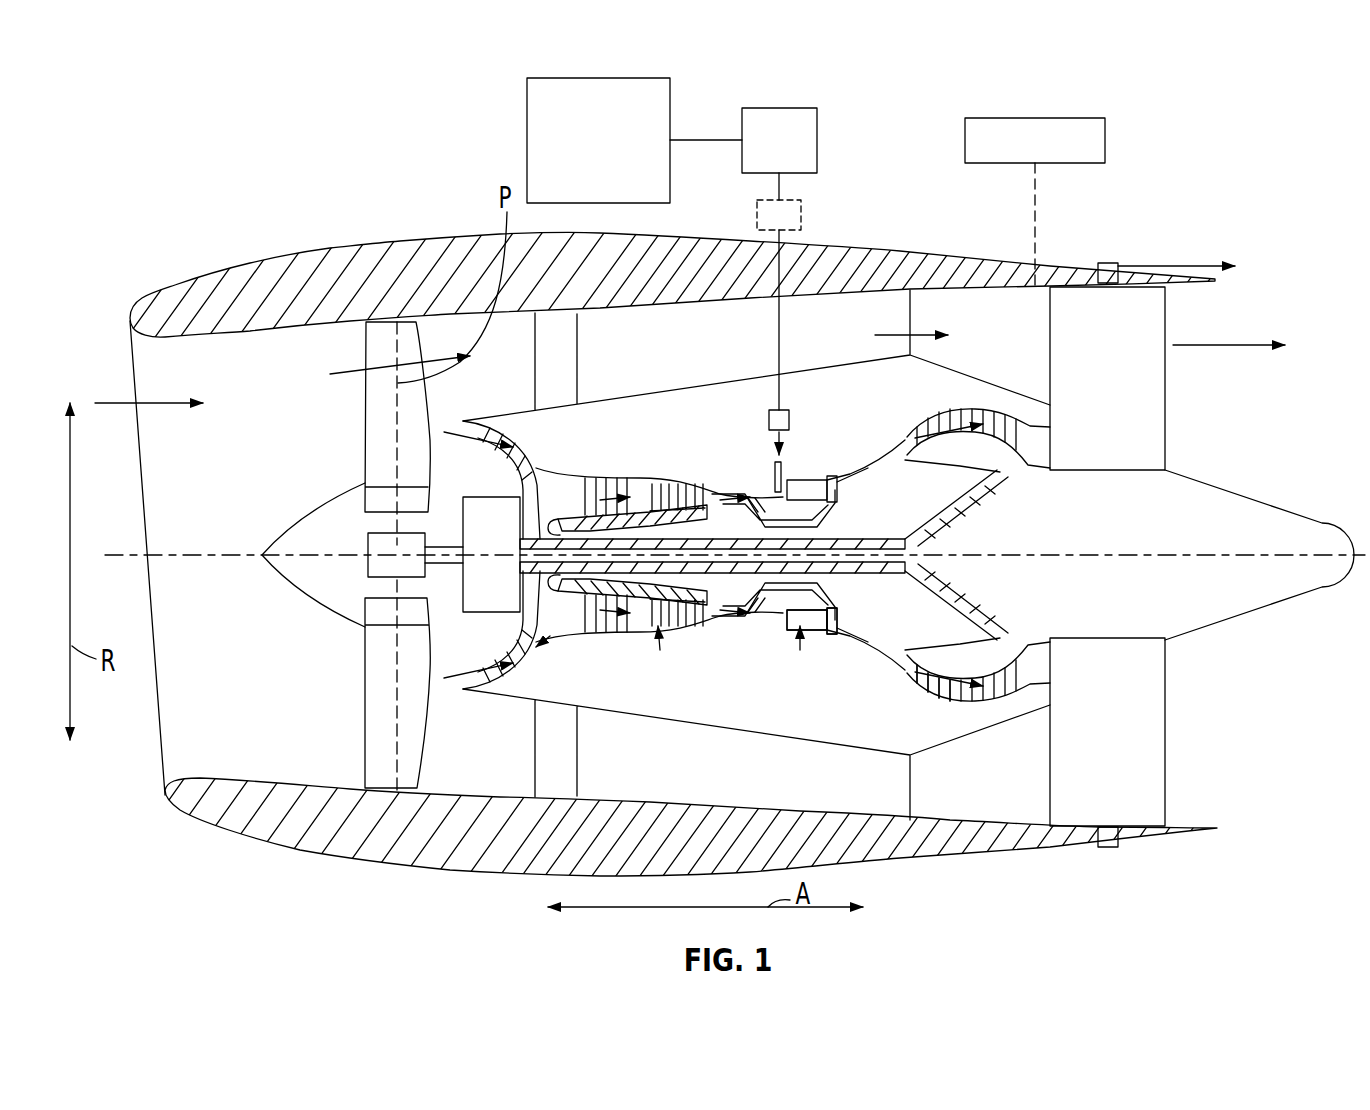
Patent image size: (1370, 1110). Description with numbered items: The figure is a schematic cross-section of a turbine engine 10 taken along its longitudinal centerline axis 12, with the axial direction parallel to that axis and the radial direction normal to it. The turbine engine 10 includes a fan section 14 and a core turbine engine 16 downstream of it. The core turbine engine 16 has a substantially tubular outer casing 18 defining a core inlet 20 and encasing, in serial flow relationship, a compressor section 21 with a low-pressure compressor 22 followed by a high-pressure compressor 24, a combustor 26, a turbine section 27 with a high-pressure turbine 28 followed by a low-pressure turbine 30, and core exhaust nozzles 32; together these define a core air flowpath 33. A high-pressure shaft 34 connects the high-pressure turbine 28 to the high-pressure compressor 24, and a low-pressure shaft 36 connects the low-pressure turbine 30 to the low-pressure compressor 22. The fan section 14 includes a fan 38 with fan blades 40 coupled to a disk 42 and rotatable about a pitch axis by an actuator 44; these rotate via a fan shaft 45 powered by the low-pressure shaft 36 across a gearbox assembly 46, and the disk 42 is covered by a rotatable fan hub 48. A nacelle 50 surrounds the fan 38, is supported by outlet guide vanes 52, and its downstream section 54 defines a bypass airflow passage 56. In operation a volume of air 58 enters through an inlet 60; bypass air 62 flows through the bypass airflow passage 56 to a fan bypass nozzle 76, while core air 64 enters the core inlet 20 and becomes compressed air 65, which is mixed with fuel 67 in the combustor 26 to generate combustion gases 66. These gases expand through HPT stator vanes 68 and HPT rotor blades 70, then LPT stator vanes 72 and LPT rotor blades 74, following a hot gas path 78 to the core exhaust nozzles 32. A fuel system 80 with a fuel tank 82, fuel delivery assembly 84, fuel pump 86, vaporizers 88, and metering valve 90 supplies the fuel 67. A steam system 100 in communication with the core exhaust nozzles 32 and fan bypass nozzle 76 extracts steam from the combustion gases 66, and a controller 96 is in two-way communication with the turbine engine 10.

The turbine engine 10 is at (245, 247).
The longitudinal centerline axis 12 is at (1160, 545).
The fan section 14 is at (335, 338).
The core turbine engine 16 is at (798, 388).
The outer casing 18 is at (749, 738).
The core inlet 20 is at (476, 677).
The compressor section 21 is at (661, 420).
The low-pressure compressor 22 is at (520, 638).
The high-pressure compressor 24 is at (607, 633).
The combustor 26 is at (788, 630).
The turbine section 27 is at (897, 409).
The high-pressure turbine 28 is at (905, 633).
The low-pressure turbine 30 is at (993, 708).
The core exhaust nozzles 32 is at (1110, 263).
The core air flowpath 33 is at (568, 630).
The high-pressure shaft 34 is at (778, 462).
The low-pressure shaft 36 is at (944, 508).
The fan 38 is at (247, 677).
The fan blades 40 is at (365, 700).
The disk 42 is at (380, 500).
The actuator 44 is at (367, 559).
The fan shaft 45 is at (433, 547).
The gearbox assembly 46 is at (477, 502).
The fan hub 48 is at (300, 586).
The nacelle 50 is at (383, 860).
The outlet guide vanes 52 is at (585, 372).
The downstream section 54 is at (940, 245).
The bypass airflow passage 56 is at (667, 345).
The volume of air 58 is at (178, 401).
The inlet 60 is at (160, 725).
The bypass air 62 is at (345, 377).
The core air 64 is at (462, 430).
The compressed air 65 is at (628, 490).
The combustion gases 66 is at (1200, 262).
The fuel 67 is at (805, 480).
The HPT stator vanes 68 is at (836, 641).
The HPT rotor blades 70 is at (866, 630).
The LPT stator vanes 72 is at (914, 673).
The LPT rotor blades 74 is at (929, 683).
The fan bypass nozzle 76 is at (1185, 384).
The hot gas path 78 is at (894, 416).
The fuel system 80 is at (516, 87).
The fuel tank 82 is at (527, 146).
The fuel delivery assembly 84 is at (779, 358).
The fuel pump 86 is at (817, 141).
The vaporizers 88 is at (801, 219).
The metering valve 90 is at (742, 320).
The controller 96 is at (1105, 141).
The steam system 100 is at (1088, 395).